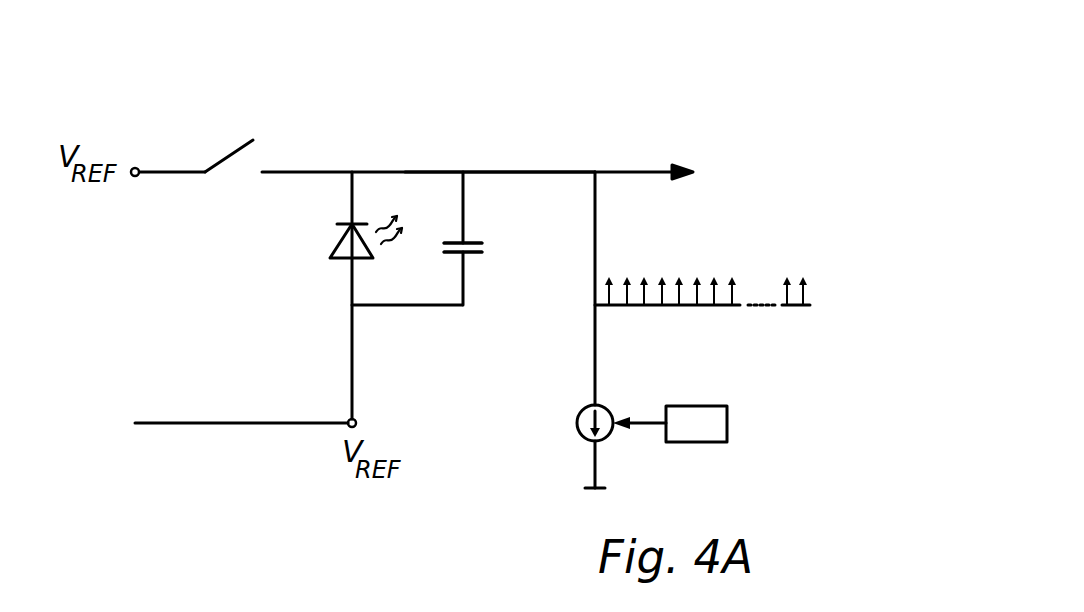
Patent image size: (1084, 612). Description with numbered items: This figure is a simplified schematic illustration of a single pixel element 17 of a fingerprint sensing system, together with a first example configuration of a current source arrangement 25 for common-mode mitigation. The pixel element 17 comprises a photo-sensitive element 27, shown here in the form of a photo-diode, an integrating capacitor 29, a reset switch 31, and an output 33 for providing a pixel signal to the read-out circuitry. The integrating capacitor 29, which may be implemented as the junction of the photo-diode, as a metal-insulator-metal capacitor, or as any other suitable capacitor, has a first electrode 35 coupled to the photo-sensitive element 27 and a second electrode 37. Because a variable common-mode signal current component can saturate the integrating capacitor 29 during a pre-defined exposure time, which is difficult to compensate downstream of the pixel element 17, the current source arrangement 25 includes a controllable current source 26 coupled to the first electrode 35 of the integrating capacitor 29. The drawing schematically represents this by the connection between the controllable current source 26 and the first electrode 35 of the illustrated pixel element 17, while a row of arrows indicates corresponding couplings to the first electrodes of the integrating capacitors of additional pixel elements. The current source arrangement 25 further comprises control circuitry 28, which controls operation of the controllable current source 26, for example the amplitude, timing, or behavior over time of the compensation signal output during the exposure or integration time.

The pixel element 17 is at (531, 96).
The current source arrangement 25 is at (575, 424).
The controllable current source 26 is at (586, 410).
The photo-sensitive element 27 is at (334, 250).
The control circuitry 28 is at (728, 428).
The integrating capacitor 29 is at (468, 230).
The reset switch 31 is at (237, 152).
The output 33 is at (648, 170).
The first electrode 35 is at (458, 240).
The second electrode 37 is at (466, 258).